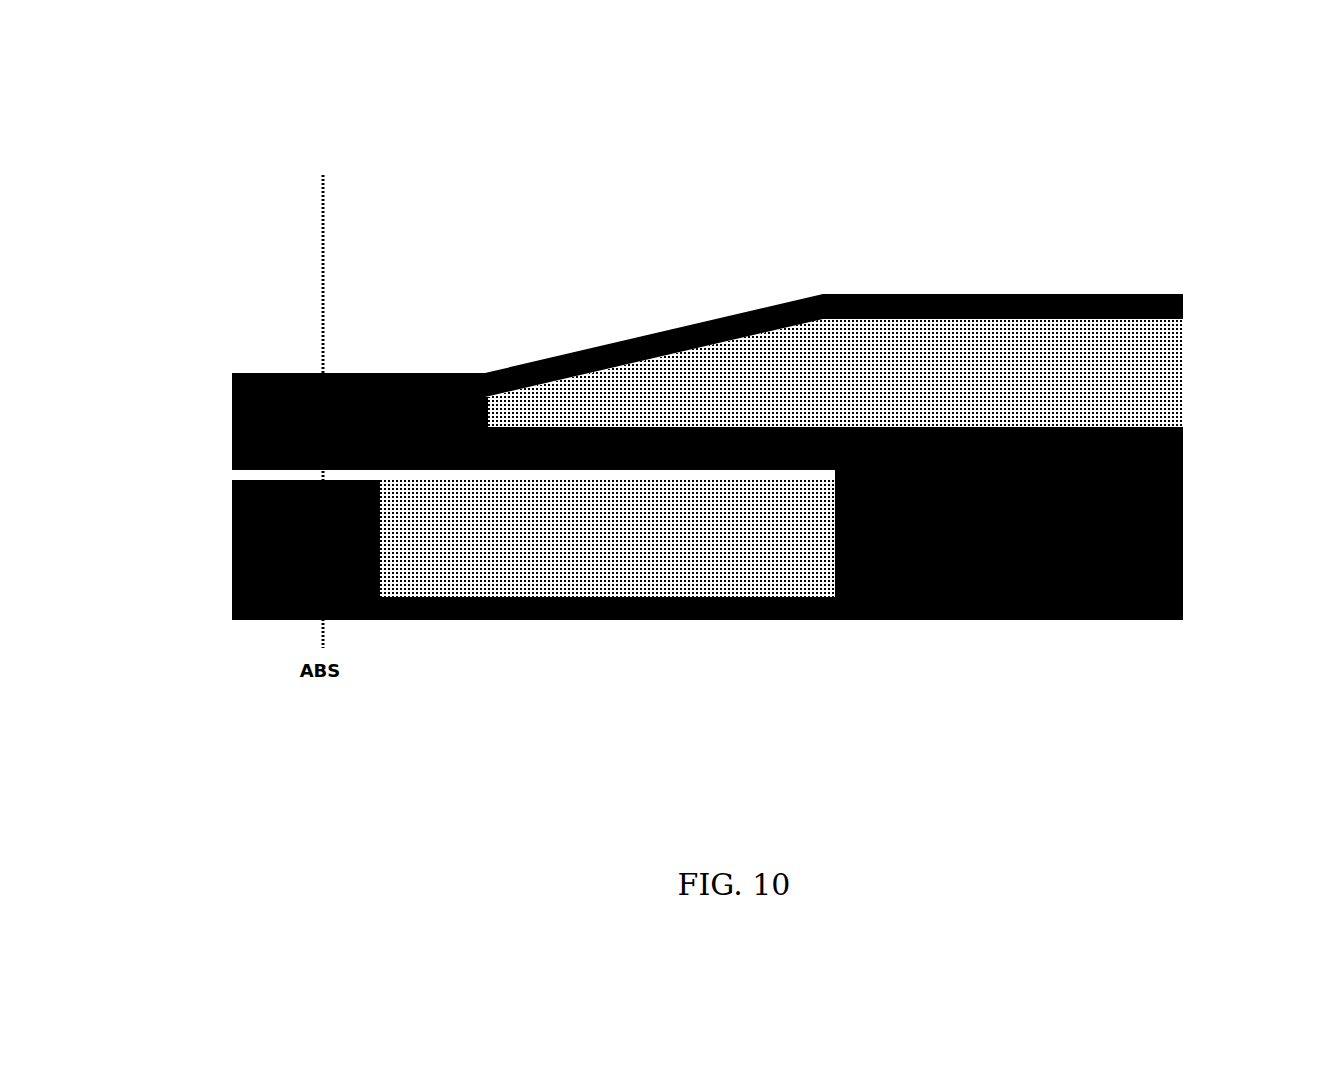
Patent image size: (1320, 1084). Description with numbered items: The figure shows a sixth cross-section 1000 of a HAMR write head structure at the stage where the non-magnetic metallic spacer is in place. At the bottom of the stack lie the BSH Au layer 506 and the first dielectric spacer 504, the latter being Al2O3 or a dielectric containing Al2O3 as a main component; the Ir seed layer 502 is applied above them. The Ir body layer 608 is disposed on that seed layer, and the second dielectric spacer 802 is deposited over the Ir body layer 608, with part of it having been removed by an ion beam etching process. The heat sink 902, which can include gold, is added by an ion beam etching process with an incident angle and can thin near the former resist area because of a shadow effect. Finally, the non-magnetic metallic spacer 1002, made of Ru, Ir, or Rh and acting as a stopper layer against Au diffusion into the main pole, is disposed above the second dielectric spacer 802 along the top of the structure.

The sixth cross-section 1000 is at (700, 402).
The non-magnetic metallic spacer 1002 is at (1025, 282).
The heat sink 902 is at (1195, 347).
The Ir body layer 608 is at (683, 405).
The Ir seed layer 502 is at (794, 452).
The second dielectric spacer 802 is at (218, 402).
The BSH Au layer 506 is at (608, 560).
The first dielectric spacer 504 is at (919, 632).